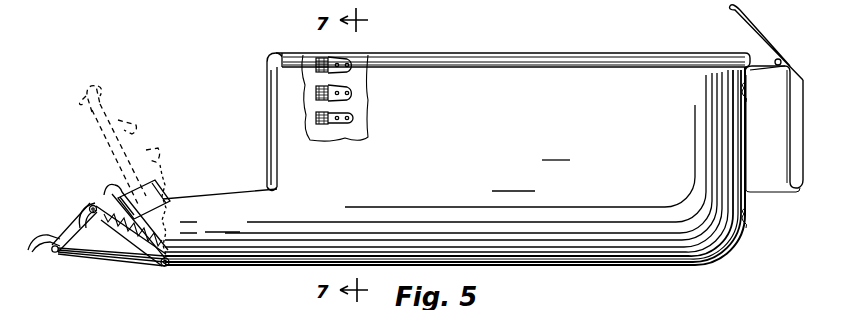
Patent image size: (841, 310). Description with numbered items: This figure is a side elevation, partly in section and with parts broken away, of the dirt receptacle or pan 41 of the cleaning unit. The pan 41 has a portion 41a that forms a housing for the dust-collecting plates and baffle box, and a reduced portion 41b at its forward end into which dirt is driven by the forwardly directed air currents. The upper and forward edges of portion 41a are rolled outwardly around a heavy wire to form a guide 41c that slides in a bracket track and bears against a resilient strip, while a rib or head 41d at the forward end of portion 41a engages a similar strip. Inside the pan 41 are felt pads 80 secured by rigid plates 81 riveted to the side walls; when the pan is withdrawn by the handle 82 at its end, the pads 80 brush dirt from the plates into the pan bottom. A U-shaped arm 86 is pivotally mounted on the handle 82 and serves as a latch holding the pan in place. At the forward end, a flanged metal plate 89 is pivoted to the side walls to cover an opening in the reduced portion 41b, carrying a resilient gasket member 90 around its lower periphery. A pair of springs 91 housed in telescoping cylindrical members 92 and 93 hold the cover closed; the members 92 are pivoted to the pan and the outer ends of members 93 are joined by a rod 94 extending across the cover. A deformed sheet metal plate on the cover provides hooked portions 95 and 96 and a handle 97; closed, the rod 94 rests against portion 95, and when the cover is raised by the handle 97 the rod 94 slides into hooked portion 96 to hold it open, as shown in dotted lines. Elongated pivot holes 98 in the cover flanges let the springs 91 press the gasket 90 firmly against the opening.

The pan 41 is at (598, 274).
The portion 41a is at (556, 152).
The reduced portion 41b is at (222, 224).
The guide 41c is at (480, 62).
The rib or head 41d is at (267, 96).
The pads 80 is at (324, 58).
The rigid plates 81 is at (343, 62).
The handle 82 is at (788, 190).
The U-shaped arm 86 is at (760, 30).
The flanged metal plate 89 is at (74, 228).
The resilient gasket member 90 is at (54, 253).
The springs 91 is at (112, 248).
The telescoping cylindrical member 92 is at (163, 266).
The telescoping cylindrical member 93 is at (136, 244).
The rod 94 is at (91, 204).
The hooked portion 95 is at (82, 210).
The hooked portion 96 is at (112, 186).
The handle 97 is at (32, 250).
The elongated holes 98 is at (166, 190).